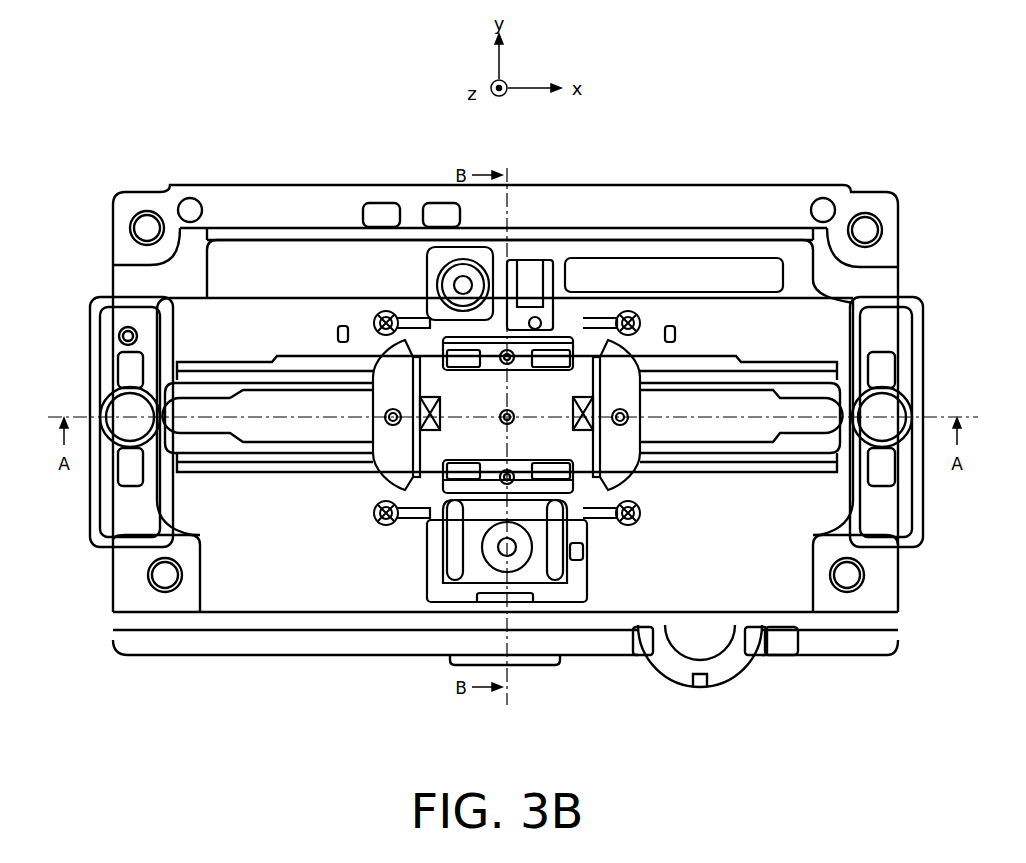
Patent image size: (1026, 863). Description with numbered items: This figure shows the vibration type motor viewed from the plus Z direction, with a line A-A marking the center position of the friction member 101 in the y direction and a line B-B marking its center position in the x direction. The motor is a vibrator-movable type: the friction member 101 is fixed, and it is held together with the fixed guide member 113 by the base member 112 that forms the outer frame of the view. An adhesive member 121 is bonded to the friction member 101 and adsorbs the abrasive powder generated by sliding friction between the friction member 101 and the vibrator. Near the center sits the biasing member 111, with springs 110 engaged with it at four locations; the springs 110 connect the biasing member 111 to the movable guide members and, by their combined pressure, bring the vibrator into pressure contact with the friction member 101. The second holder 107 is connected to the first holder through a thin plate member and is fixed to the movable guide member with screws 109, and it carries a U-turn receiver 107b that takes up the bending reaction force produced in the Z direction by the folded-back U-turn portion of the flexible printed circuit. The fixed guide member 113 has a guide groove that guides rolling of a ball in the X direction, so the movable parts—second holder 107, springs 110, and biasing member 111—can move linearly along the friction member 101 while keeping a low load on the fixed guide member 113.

The friction member 101 is at (263, 407).
The second holder 107 is at (533, 300).
The U-turn receiver 107b is at (712, 268).
The screws 109 is at (383, 393).
The springs 110 is at (376, 327).
The biasing member 111 is at (463, 400).
The base member 112 is at (298, 208).
The fixed guide member 113 is at (203, 367).
The adhesive member 121 is at (290, 388).